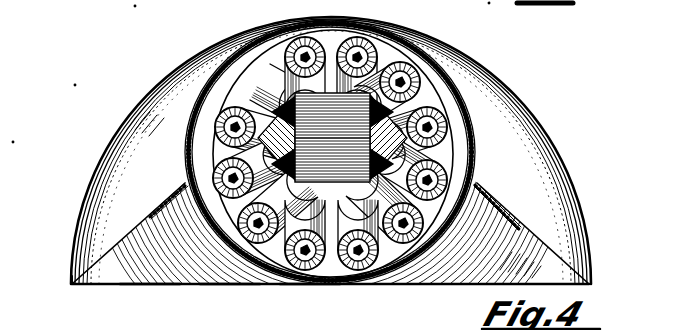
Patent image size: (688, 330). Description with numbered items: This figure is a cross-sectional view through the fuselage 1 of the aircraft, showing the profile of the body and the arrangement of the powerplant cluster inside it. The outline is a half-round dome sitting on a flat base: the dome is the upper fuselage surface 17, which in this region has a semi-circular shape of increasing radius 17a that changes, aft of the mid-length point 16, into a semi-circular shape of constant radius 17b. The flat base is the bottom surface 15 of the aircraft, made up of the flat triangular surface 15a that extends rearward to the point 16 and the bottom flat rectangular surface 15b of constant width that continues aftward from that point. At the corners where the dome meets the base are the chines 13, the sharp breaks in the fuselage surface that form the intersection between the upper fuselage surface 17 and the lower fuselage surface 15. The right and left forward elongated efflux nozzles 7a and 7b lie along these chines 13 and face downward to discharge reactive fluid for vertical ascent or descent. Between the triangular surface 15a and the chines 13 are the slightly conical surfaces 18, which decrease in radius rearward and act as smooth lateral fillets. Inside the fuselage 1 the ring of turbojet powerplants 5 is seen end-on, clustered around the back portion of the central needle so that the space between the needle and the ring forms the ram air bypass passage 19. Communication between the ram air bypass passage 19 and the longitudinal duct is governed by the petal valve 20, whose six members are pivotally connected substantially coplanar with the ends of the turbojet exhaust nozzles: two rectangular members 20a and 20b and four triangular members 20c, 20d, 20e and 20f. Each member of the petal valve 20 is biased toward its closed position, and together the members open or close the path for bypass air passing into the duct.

The fuselage 1 is at (104, 145).
The turbojet powerplants 5 is at (396, 272).
The right forward elongated efflux nozzle 7a is at (161, 214).
The left forward elongated efflux nozzle 7b is at (514, 224).
The chines 13 is at (98, 262).
The bottom surface 15 is at (227, 284).
The flat triangular surface 15a is at (300, 288).
The bottom flat rectangular surface 15b is at (141, 287).
The point 16 is at (66, 282).
The upper fuselage surface 17 is at (533, 72).
The semi-circular shape of increasing radius 17a is at (193, 73).
The semi-circular shape of constant radius 17b is at (156, 90).
The slightly conical surfaces 18 is at (176, 277).
The ram air bypass passage 19 is at (384, 42).
The petal valve 20 is at (225, 163).
The rectangular member 20a is at (302, 50).
The rectangular member 20b is at (386, 149).
The triangular member 20c is at (214, 123).
The triangular member 20d is at (290, 175).
The triangular member 20e is at (372, 114).
The triangular member 20f is at (402, 163).